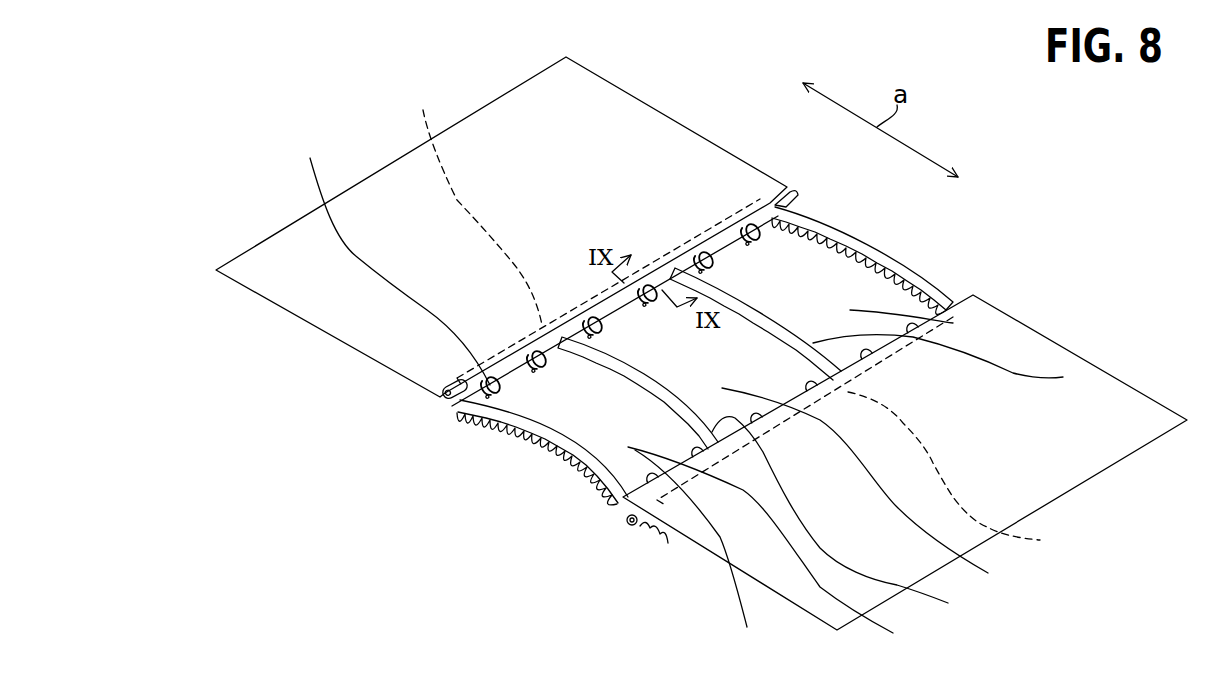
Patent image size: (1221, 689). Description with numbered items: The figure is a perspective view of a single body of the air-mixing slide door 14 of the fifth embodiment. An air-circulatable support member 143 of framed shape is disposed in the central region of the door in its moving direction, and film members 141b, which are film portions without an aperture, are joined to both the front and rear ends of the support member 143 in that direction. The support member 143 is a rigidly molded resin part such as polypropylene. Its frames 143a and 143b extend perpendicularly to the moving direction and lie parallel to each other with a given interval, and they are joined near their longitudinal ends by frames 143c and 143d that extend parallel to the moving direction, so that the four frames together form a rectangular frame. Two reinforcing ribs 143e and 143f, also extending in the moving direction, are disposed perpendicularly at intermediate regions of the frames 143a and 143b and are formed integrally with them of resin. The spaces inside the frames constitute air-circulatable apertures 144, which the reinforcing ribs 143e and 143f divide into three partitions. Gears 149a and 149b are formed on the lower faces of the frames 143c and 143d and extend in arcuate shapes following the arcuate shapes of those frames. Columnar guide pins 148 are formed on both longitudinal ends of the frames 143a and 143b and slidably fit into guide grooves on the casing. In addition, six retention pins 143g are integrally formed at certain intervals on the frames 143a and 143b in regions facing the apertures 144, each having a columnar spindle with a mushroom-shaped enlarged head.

The air-mixing slide door 14 is at (580, 497).
The film member 141b is at (595, 110).
The air-circulatable support member 143 is at (558, 477).
The frame 143a is at (468, 203).
The frame 143b is at (641, 532).
The frame 143c is at (482, 425).
The frame 143d is at (912, 268).
The reinforcing rib 143e is at (862, 518).
The reinforcing rib 143f is at (1063, 377).
The retention pin 143g is at (534, 395).
The air-circulatable aperture 144 is at (953, 323).
The guide pin 148 is at (442, 398).
The gear 149a is at (525, 455).
The gear 149b is at (847, 243).